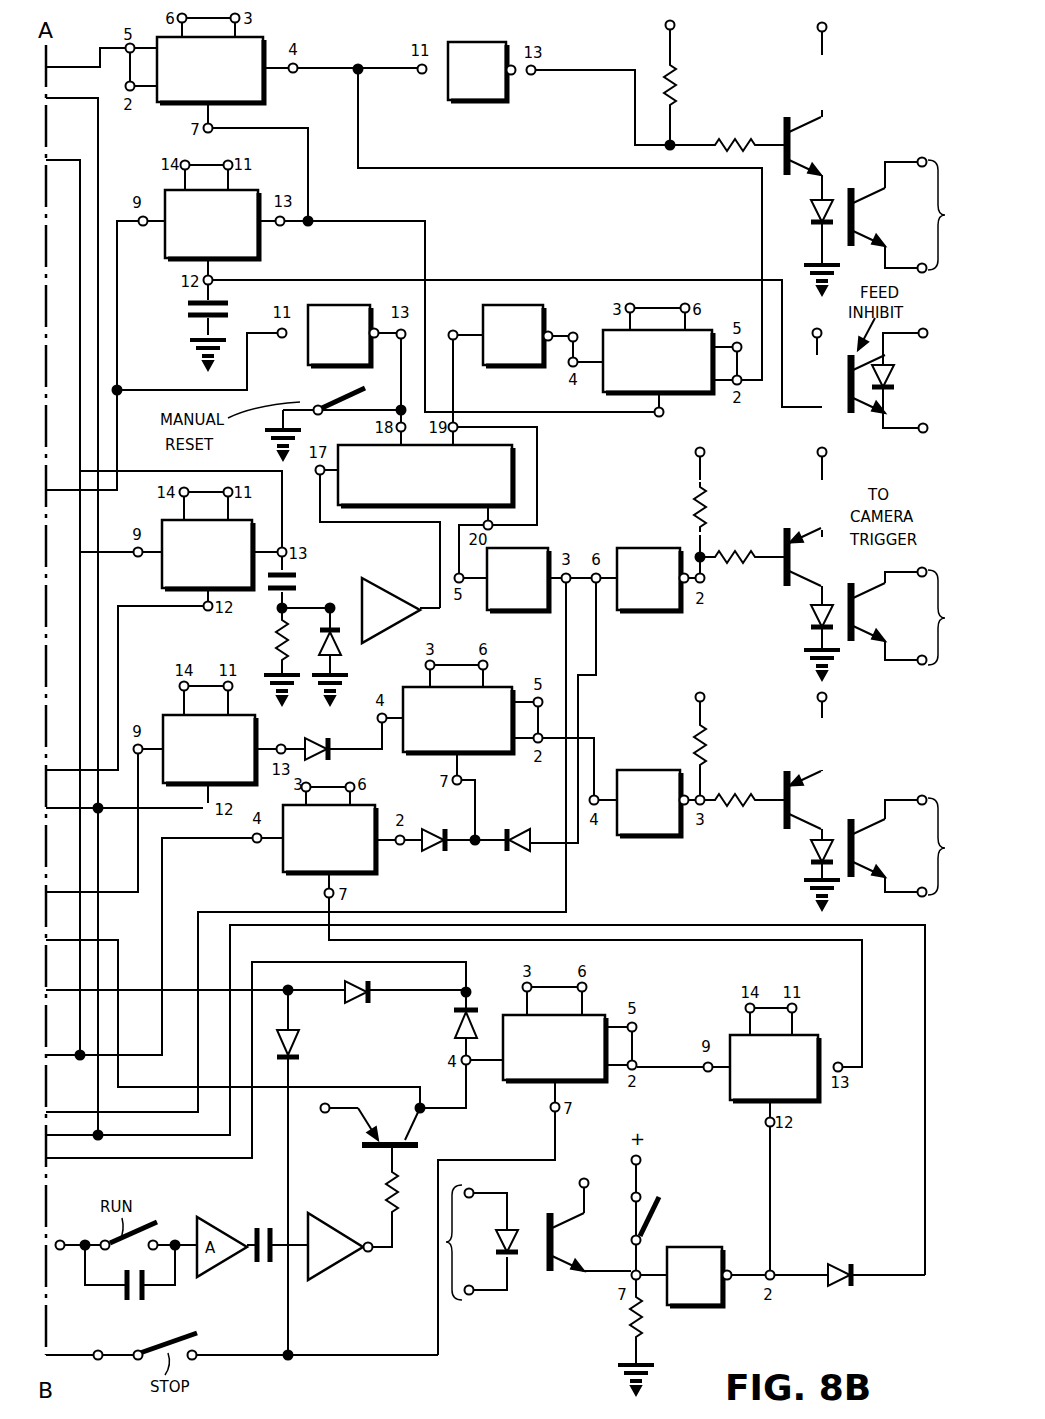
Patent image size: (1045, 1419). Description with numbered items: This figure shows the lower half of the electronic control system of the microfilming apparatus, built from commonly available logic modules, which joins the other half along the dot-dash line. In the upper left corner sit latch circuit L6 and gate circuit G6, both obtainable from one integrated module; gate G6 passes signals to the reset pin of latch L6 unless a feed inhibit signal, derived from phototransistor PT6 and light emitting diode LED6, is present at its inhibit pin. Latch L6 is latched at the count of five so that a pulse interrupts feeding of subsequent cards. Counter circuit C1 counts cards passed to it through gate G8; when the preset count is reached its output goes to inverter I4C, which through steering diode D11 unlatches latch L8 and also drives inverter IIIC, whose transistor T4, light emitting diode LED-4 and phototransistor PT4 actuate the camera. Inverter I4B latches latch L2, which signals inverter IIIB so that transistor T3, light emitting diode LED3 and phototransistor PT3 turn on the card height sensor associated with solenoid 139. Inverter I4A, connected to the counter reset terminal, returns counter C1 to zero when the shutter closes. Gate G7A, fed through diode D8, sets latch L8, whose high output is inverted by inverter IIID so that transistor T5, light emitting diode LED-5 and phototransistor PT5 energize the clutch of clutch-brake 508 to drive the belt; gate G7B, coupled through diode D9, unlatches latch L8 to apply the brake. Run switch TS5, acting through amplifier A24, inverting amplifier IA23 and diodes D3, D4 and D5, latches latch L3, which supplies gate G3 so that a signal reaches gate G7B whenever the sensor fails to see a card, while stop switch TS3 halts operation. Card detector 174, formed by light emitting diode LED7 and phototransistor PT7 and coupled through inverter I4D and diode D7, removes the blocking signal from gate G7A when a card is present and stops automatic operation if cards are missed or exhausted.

The latch circuit L6 is at (210, 70).
The inverter circuit IIIB is at (477, 71).
The gate circuit G6 is at (212, 224).
The inverter circuit I4A is at (339, 335).
The inverter circuit I4B is at (513, 335).
The latch circuit L2 is at (658, 361).
The counter circuit C1 is at (512, 477).
The gate circuit G8 is at (207, 554).
The inverter circuit I4C is at (518, 579).
The inverter circuit IIIC is at (649, 579).
The gate circuit G7A is at (209, 749).
The latch circuit L8 is at (458, 720).
The inverter circuit IIID is at (649, 803).
The gate circuit G7B is at (329, 839).
The latch circuit L3 is at (554, 1048).
The gate circuit G3 is at (774, 1068).
The inverter circuit I4D is at (695, 1276).
The transistor T3 is at (785, 133).
The light emitting diode LED3 is at (815, 215).
The phototransistor PT3 is at (858, 215).
The card height sensor solenoid 139 is at (932, 203).
The phototransistor PT6 is at (848, 412).
The light emitting diode LED6 is at (878, 395).
The transistor T4 is at (783, 540).
The light emitting diode LED-4 is at (812, 614).
The phototransistor PT4 is at (896, 628).
The transistor T5 is at (783, 785).
The light emitting diode LED-5 is at (812, 850).
The phototransistor PT5 is at (858, 845).
The clutch-brake 508 is at (938, 830).
The amplifier A24 is at (390, 595).
The diode D8 is at (318, 740).
The diode D9 is at (430, 852).
The steering diode D11 is at (518, 852).
The diode D4 is at (352, 1003).
The diode D5 is at (455, 1022).
The diode D3 is at (298, 1042).
The diode D7 is at (840, 1287).
The run switch TS5 is at (158, 1222).
The stop switch TS3 is at (197, 1334).
The inverting amplifier IA23 is at (333, 1270).
The phototransistor PT7 is at (557, 1240).
The light emitting diode LED7 is at (515, 1258).
The card detector 174 is at (448, 1280).